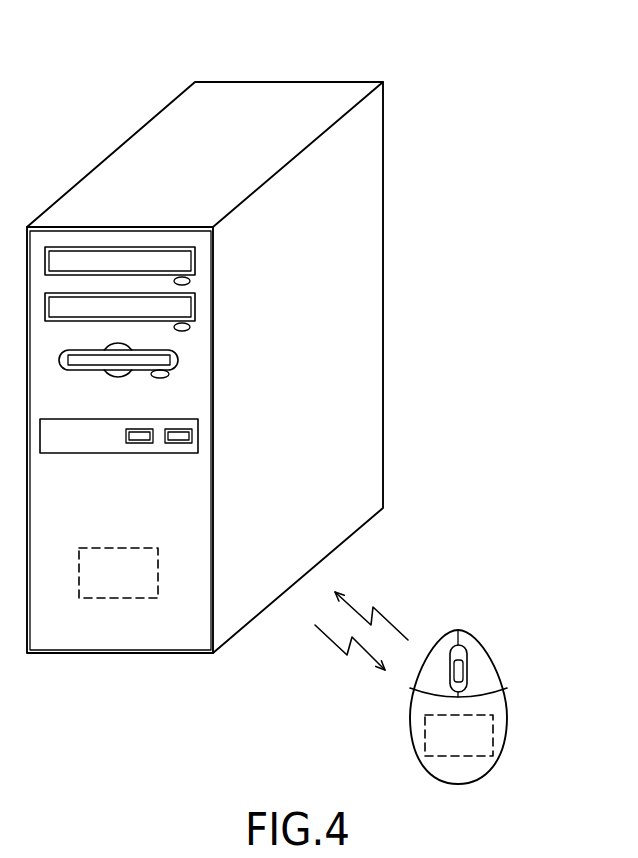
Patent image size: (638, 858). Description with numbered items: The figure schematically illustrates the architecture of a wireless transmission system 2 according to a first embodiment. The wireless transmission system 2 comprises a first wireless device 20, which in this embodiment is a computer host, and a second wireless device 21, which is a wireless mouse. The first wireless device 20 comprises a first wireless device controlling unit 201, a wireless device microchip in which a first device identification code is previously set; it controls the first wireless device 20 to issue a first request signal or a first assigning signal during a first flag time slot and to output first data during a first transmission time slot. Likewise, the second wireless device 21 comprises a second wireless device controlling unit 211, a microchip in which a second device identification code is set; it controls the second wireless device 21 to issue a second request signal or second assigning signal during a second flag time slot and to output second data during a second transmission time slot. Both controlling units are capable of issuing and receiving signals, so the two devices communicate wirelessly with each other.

The wireless transmission system 2 is at (428, 34).
The first wireless device 20 is at (132, 158).
The first wireless device controlling unit 201 is at (122, 556).
The second wireless device 21 is at (484, 640).
The second wireless device controlling unit 211 is at (471, 716).